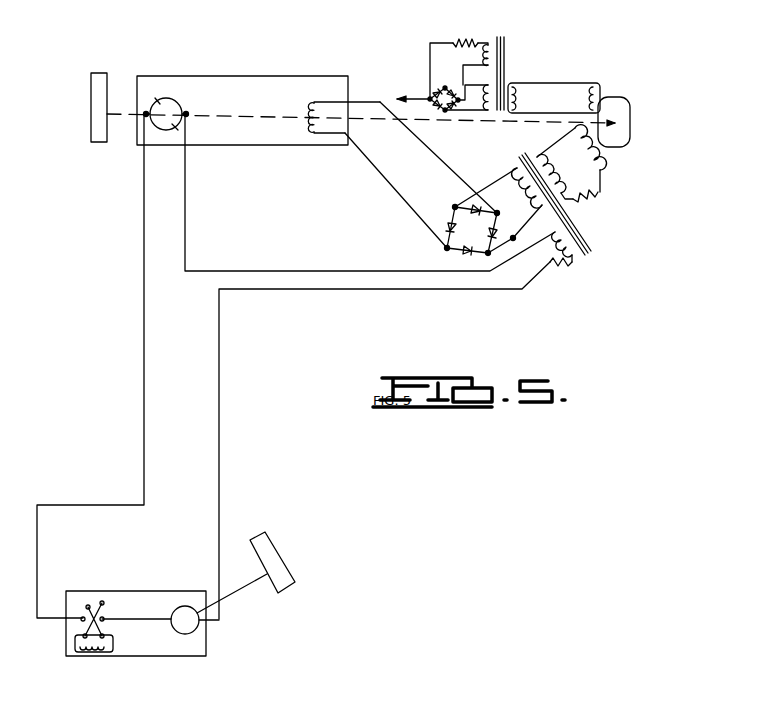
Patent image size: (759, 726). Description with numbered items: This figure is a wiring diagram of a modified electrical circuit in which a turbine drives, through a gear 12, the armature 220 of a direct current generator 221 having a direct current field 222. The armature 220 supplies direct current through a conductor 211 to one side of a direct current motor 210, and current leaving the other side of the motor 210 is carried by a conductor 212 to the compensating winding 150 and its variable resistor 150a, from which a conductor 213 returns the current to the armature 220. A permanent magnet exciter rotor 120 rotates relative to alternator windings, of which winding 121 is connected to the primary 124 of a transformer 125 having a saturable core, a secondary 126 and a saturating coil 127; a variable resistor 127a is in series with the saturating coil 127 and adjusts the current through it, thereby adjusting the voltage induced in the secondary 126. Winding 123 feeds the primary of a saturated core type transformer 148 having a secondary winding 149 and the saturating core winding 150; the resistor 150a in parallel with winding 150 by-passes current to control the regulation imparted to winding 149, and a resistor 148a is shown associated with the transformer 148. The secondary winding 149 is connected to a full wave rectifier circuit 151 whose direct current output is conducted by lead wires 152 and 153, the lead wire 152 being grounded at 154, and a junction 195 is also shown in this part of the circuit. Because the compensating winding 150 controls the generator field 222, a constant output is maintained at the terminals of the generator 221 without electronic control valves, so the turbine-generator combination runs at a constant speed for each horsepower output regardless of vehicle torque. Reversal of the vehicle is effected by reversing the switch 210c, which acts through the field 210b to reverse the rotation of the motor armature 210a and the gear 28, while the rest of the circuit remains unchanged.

The gear 12 is at (91, 78).
The gear 28 is at (292, 578).
The permanent magnet exciter rotor 120 is at (625, 110).
The alternator winding 121 is at (589, 96).
The alternator winding 123 is at (572, 162).
The primary 124 is at (531, 98).
The transformer 125 is at (505, 61).
The secondary 126 is at (480, 90).
The saturating coil 127 is at (484, 55).
The variable resistor 127a is at (460, 42).
The saturated core type transformer 148 is at (523, 156).
The resistor 148a is at (592, 194).
The secondary winding 149 is at (520, 190).
The saturating core winding 150 is at (588, 252).
The variable resistor 150a is at (558, 266).
The full wave rectifier circuit 151 is at (452, 207).
The lead wire 152 is at (422, 140).
The lead wire 153 is at (380, 178).
The ground 154 is at (503, 246).
The junction 195 is at (516, 239).
The direct current motor 210 is at (118, 591).
The armature 210a is at (185, 634).
The field 210b is at (113, 641).
The switch 210c is at (100, 600).
The conductor 211 is at (144, 427).
The conductor 212 is at (392, 289).
The conductor 213 is at (282, 271).
The armature 220 is at (178, 100).
The direct current generator 221 is at (270, 76).
The direct current field 222 is at (308, 104).